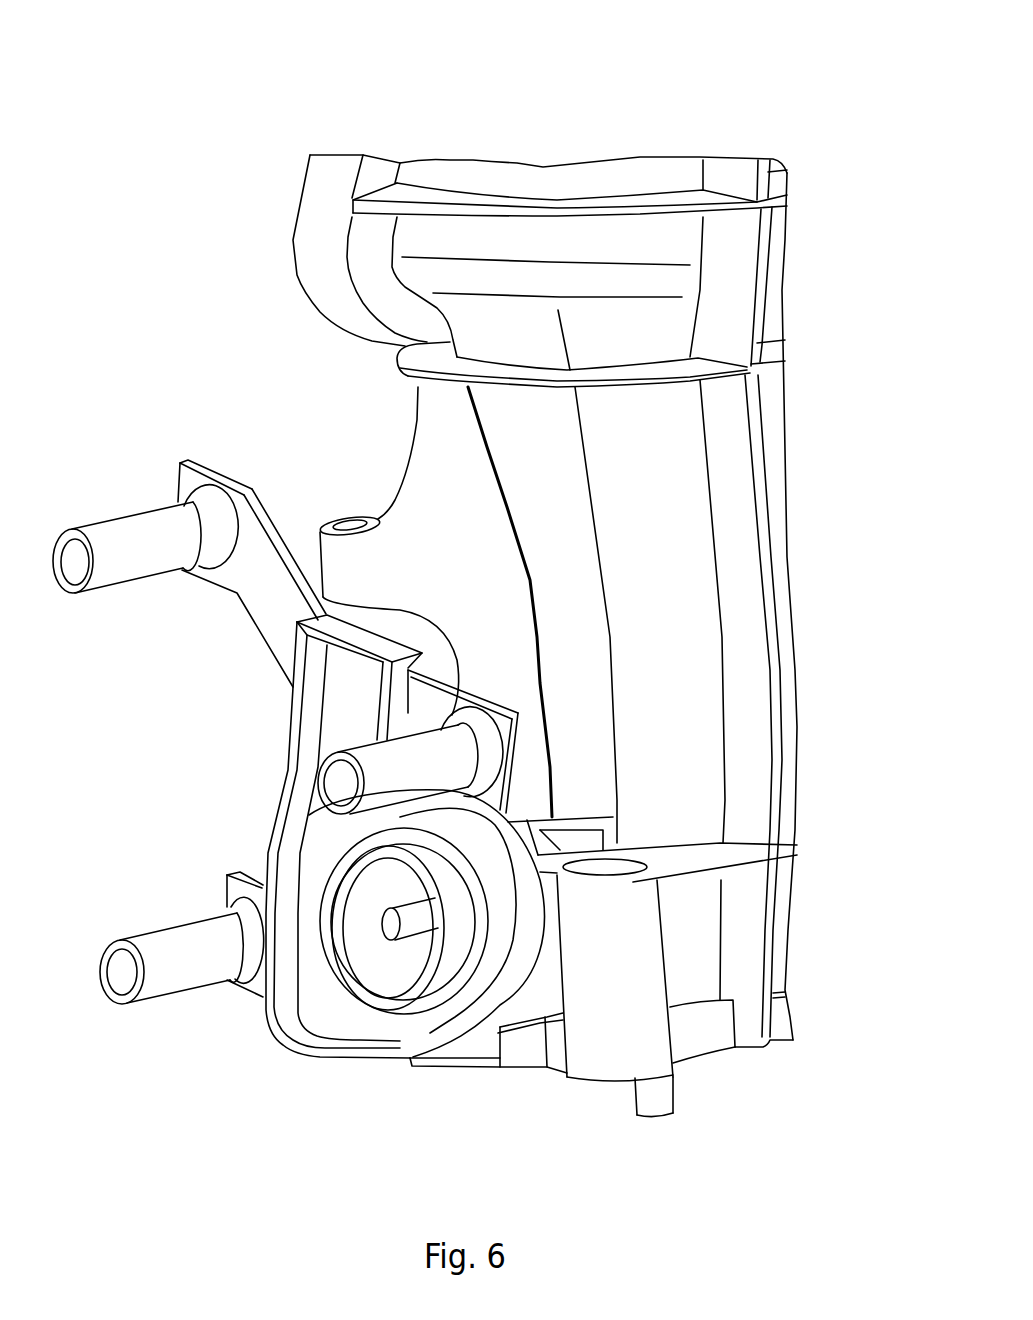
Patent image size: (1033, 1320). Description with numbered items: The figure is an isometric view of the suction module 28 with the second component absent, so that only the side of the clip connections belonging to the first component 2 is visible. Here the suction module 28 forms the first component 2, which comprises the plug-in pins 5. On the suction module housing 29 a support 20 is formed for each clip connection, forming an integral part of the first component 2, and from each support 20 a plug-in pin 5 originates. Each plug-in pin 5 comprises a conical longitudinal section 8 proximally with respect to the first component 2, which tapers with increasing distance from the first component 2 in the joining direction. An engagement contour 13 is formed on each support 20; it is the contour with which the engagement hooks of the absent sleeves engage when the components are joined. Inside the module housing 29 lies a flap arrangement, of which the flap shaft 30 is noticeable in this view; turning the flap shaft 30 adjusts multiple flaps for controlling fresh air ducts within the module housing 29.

The first component 2 is at (584, 563).
The suction module 28 is at (750, 122).
The suction module housing 29 is at (718, 505).
The plug-in pin 5 is at (120, 500).
The conical longitudinal section 8 is at (213, 560).
The engagement contour 13 is at (226, 473).
The support 20 is at (192, 460).
The flap shaft 30 is at (388, 926).